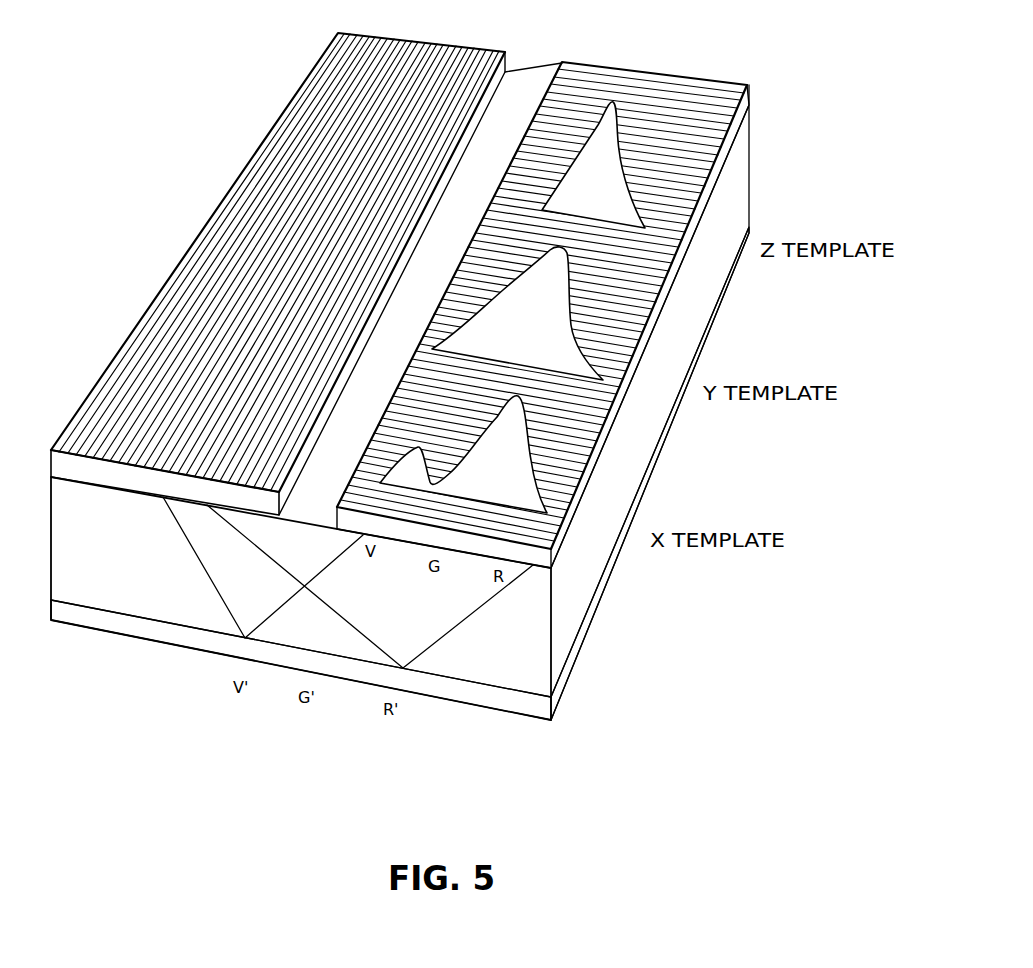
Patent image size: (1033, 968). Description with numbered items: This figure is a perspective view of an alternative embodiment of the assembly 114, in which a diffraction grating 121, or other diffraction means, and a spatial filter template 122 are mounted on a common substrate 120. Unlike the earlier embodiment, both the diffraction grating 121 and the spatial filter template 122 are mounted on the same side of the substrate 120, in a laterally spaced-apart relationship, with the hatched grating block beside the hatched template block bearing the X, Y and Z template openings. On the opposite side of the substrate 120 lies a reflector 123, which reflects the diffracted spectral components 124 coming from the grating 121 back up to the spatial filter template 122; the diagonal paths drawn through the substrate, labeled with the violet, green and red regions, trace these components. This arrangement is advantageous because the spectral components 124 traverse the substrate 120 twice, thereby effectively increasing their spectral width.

The assembly 114 is at (269, 274).
The substrate 120 is at (400, 404).
The diffraction grating 121 is at (65, 467).
The spatial filter template 122 is at (547, 560).
The reflector 123 is at (527, 707).
The spectral components 124 is at (425, 618).